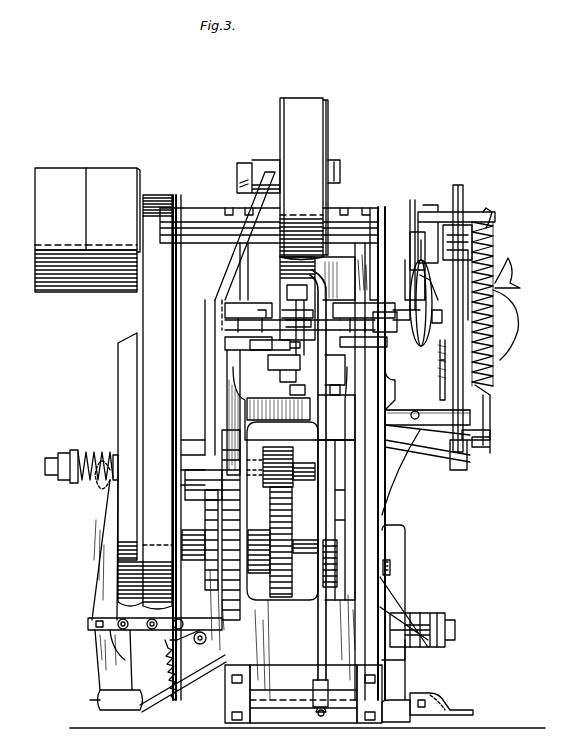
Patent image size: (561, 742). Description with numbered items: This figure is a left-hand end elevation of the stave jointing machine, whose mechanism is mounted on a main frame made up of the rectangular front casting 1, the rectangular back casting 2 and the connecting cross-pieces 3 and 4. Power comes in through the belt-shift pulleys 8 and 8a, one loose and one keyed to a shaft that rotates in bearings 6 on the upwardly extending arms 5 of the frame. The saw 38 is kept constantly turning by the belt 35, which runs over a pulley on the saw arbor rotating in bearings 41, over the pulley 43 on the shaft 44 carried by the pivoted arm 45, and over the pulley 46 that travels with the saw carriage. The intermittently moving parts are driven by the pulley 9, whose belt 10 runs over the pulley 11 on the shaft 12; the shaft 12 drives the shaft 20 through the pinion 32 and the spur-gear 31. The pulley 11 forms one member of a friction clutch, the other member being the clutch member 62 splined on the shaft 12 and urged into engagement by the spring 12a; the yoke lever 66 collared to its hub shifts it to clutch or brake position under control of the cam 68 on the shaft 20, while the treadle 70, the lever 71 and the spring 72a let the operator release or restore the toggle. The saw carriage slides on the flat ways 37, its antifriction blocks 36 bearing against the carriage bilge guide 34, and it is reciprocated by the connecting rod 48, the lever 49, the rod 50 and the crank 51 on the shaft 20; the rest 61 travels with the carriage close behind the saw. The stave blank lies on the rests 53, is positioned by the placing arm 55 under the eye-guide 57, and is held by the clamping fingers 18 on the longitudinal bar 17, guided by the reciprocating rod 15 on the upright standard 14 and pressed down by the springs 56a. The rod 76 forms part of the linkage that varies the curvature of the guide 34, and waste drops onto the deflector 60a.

The front casting 1 is at (393, 650).
The back casting 2 is at (307, 649).
The cross-piece 3 is at (336, 417).
The cross-piece 4 is at (325, 493).
The upwardly extending arm 5 is at (386, 255).
The bearing 6 is at (208, 215).
The belt-shift pulley 8 is at (87, 230).
The belt-shift pulley 8a is at (60, 209).
The pulley 9 is at (178, 204).
The belt 10 is at (157, 412).
The pulley 11 is at (178, 408).
The shaft 12 is at (300, 462).
The spring 12a is at (93, 455).
The upright standard 14 is at (425, 370).
The reciprocating rod 15 is at (462, 186).
The longitudinal bar 17 is at (440, 212).
The clamping finger 18 is at (492, 222).
The shaft 20 is at (298, 547).
The spur-gear 31 is at (271, 510).
The pinion 32 is at (278, 450).
The carriage bilge guide 34 is at (305, 385).
The belt 35 is at (300, 110).
The antifriction block 36 is at (233, 370).
The flat way 37 is at (225, 345).
The saw 38 is at (440, 352).
The bearing 41 is at (260, 305).
The pulley 43 is at (330, 123).
The shaft 44 is at (340, 172).
The pivoted arm 45 is at (232, 258).
The pulley 46 is at (330, 300).
The connecting rod 48 is at (310, 278).
The lever 49 is at (325, 465).
The rod 50 is at (400, 600).
The crank 51 is at (395, 548).
The rest 53 is at (510, 283).
The placing arm 55 is at (520, 318).
The spring 56a is at (497, 360).
The eye-guide 57 is at (410, 262).
The deflector 60a is at (395, 500).
The rest 61 is at (425, 280).
The clutch member 62 is at (122, 375).
The yoke lever 66 is at (105, 560).
The cam 68 is at (208, 578).
The treadle 70 is at (462, 708).
The lever 71 is at (394, 703).
The spring 72a is at (168, 640).
The rod 76 is at (422, 460).